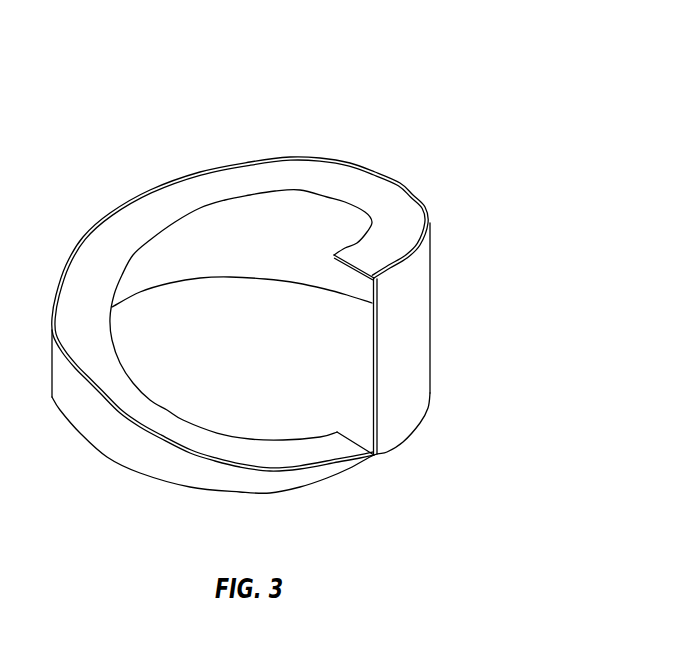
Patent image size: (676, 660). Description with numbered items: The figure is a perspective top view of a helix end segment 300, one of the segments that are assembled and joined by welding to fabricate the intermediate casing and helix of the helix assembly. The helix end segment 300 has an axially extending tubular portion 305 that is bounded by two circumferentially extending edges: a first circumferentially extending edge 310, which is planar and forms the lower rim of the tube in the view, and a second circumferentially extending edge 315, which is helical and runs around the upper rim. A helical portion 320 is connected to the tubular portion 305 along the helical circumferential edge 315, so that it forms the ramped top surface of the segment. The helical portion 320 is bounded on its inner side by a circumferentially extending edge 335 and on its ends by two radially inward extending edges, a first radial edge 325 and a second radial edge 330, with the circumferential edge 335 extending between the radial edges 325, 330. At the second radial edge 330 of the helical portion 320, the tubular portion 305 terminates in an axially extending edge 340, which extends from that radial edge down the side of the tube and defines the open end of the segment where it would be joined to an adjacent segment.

The helix end segment 300 is at (434, 70).
The tubular portion 305 is at (432, 311).
The first circumferentially extending edge 310 is at (283, 491).
The second circumferentially extending edge 315 is at (417, 195).
The helical portion 320 is at (122, 229).
The first radial edge 325 is at (356, 442).
The second radial edge 330 is at (354, 270).
The circumferentially extending edge 335 is at (287, 192).
The axially extending edge 340 is at (372, 383).